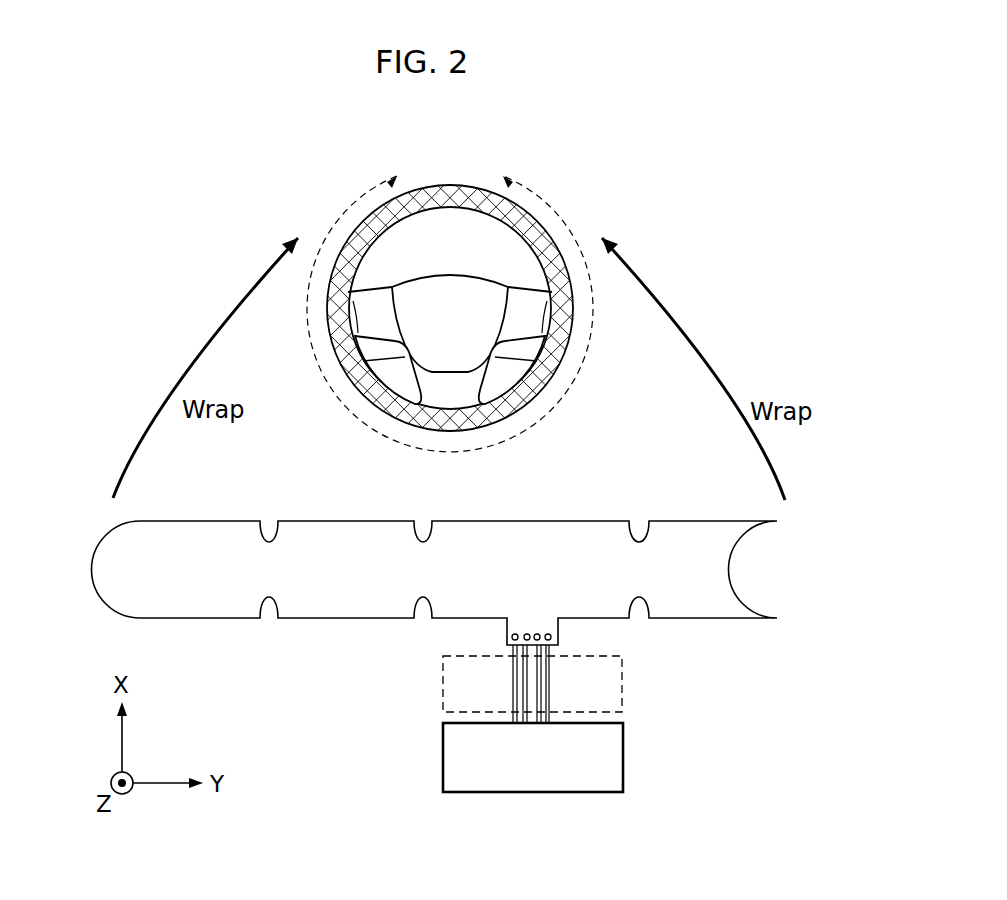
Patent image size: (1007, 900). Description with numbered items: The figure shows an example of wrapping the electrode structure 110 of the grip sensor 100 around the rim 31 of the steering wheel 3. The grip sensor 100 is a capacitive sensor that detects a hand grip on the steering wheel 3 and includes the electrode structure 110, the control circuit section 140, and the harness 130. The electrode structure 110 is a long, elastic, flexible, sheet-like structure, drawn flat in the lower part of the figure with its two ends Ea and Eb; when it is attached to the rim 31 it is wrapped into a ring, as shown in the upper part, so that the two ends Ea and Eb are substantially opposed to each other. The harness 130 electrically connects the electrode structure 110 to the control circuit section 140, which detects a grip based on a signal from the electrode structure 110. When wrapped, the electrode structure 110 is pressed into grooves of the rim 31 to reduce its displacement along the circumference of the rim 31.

The grip sensor 100 is at (660, 777).
The electrode structure 110 is at (533, 521).
The harness 130 is at (623, 687).
The control circuit section 140 is at (625, 737).
The steering wheel 3 is at (491, 314).
The rim 31 is at (558, 373).
The end of electrode structure Ea is at (460, 228).
The end of electrode structure Eb is at (770, 565).